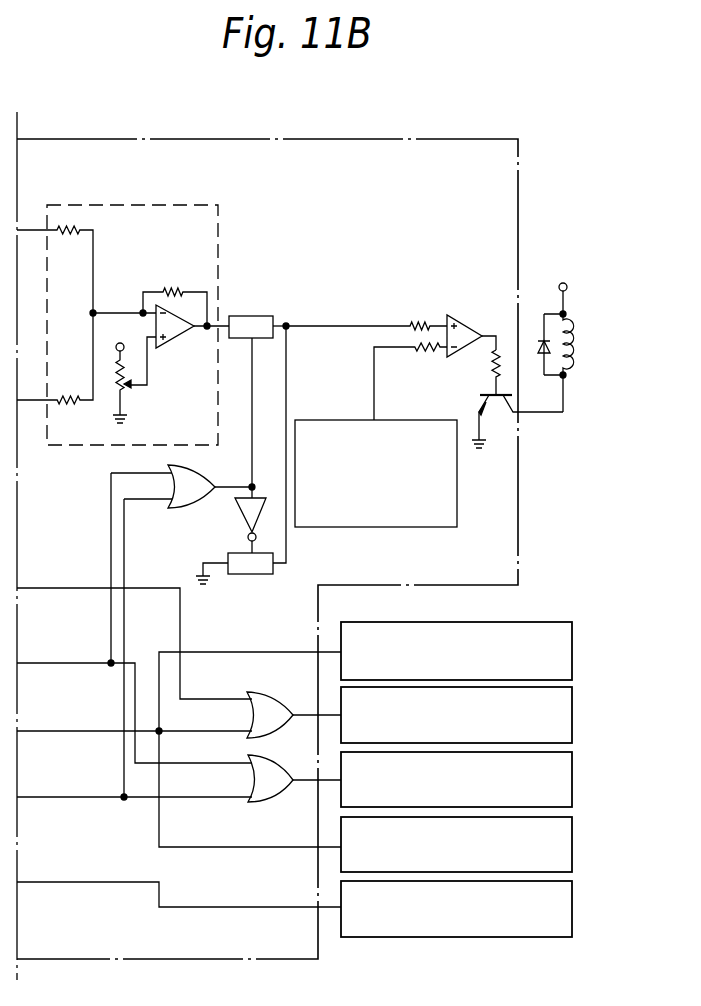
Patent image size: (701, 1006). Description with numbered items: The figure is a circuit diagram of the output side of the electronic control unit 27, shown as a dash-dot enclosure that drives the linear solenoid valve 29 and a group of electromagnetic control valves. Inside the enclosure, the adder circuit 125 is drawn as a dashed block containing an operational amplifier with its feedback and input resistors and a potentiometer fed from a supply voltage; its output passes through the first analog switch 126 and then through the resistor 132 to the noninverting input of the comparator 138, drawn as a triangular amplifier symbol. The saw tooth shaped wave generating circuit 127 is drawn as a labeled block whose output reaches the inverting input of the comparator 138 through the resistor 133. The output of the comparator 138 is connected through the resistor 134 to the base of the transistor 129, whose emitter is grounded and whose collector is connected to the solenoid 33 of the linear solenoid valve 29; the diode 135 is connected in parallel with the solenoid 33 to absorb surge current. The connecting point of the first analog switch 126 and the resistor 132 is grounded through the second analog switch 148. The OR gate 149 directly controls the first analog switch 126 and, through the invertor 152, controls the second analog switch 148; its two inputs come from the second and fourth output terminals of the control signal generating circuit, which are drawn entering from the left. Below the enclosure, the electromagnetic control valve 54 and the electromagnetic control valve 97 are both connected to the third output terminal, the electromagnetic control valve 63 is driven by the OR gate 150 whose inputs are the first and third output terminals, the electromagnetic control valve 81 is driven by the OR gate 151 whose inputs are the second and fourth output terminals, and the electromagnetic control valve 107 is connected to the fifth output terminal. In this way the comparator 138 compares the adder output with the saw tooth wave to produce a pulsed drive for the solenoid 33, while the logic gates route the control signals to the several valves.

The electronic control unit 27 is at (420, 141).
The adder circuit 125 is at (157, 206).
The first analog switch 126 is at (251, 315).
The saw tooth shaped wave generating circuit 127 is at (426, 521).
The transistor 129 is at (476, 398).
The resistor 132 is at (415, 318).
The resistor 133 is at (420, 358).
The resistor 134 is at (503, 350).
The diode 135 is at (538, 344).
The comparator 138 is at (462, 314).
The second analog switch 148 is at (251, 576).
The OR gate 149 is at (181, 506).
The OR gate 150 is at (262, 694).
The OR gate 151 is at (262, 804).
The invertor 152 is at (242, 506).
The linear solenoid valve 29 is at (572, 340).
The solenoid 33 is at (568, 366).
The electromagnetic control valve 54 is at (572, 640).
The electromagnetic control valve 63 is at (572, 706).
The electromagnetic control valve 81 is at (572, 772).
The electromagnetic control valve 97 is at (572, 836).
The electromagnetic control valve 107 is at (572, 912).